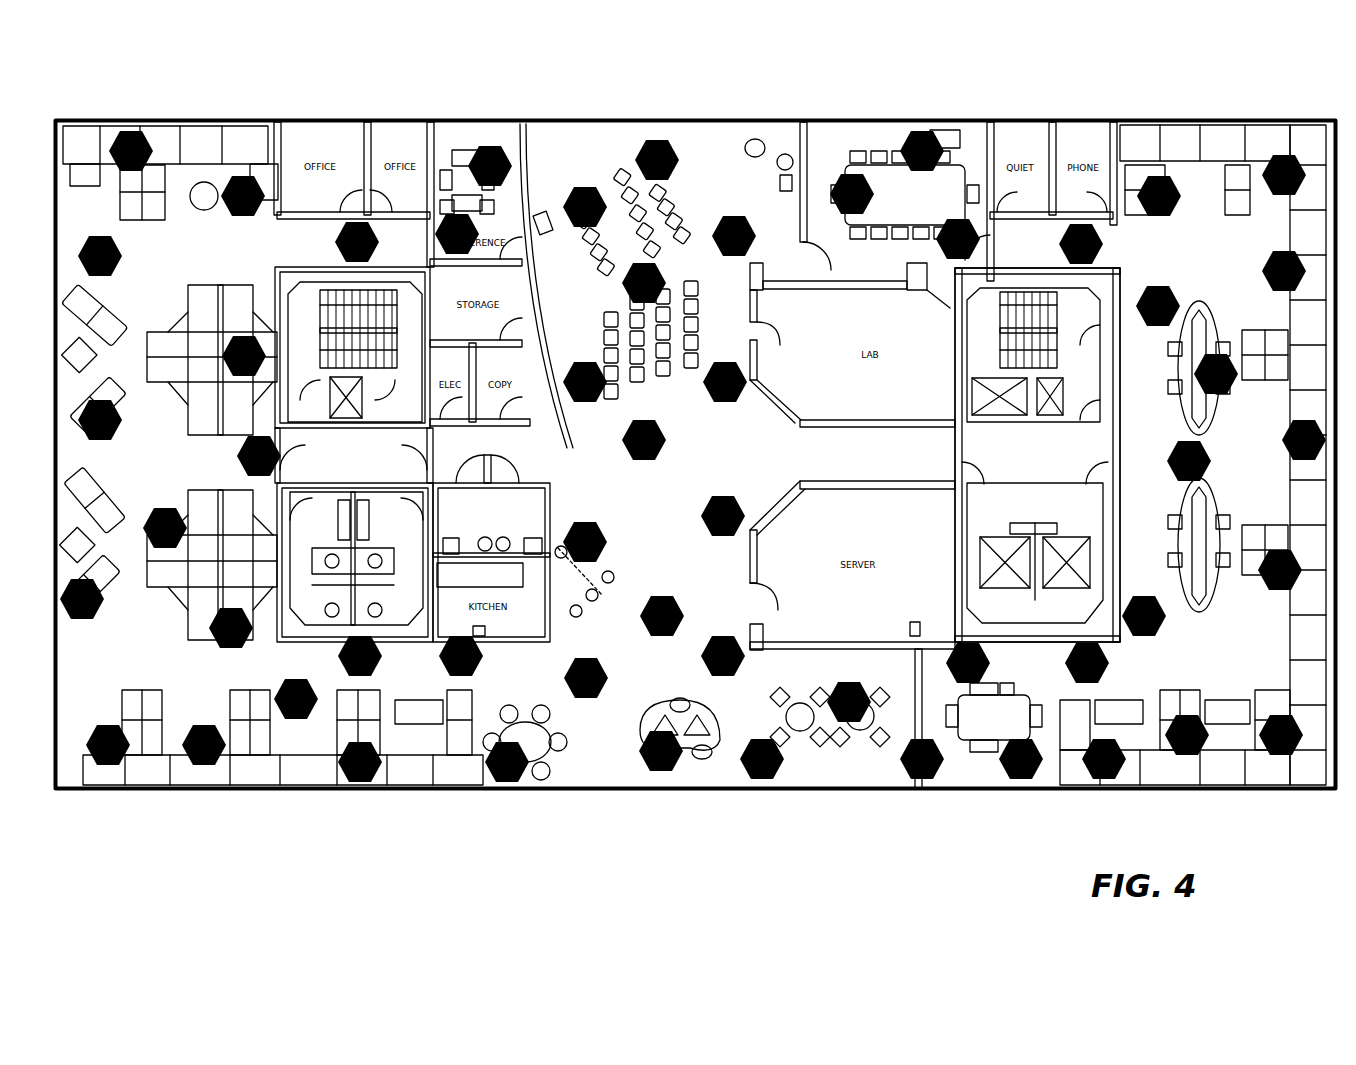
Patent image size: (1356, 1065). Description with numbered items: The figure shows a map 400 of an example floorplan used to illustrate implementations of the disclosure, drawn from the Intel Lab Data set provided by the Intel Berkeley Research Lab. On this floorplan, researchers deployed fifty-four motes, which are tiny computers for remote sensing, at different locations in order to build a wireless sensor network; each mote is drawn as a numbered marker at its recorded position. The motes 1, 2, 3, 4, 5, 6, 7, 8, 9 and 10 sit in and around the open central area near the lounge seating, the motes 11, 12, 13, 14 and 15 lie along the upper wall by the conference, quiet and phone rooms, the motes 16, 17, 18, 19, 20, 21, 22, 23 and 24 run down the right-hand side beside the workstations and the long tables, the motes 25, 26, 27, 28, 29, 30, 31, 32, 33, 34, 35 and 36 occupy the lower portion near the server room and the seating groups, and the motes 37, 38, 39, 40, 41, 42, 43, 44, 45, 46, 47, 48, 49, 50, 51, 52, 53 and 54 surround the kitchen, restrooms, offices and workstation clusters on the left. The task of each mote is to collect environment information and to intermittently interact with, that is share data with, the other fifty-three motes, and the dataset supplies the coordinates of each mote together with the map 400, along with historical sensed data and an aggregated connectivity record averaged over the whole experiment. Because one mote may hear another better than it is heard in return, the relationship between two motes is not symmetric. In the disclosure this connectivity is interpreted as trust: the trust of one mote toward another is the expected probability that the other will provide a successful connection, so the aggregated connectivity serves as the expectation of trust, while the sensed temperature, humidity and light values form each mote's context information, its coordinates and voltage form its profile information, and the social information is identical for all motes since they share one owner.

The map 400 is at (1282, 73).
The mote 1 is at (662, 616).
The mote 2 is at (585, 542).
The mote 3 is at (723, 516).
The mote 4 is at (644, 440).
The mote 5 is at (585, 382).
The mote 6 is at (725, 382).
The mote 7 is at (644, 283).
The mote 8 is at (585, 207).
The mote 9 is at (657, 160).
The mote 10 is at (734, 236).
The mote 11 is at (852, 194).
The mote 12 is at (922, 151).
The mote 13 is at (958, 239).
The mote 14 is at (1081, 244).
The mote 15 is at (1159, 196).
The mote 16 is at (1284, 175).
The mote 17 is at (1284, 271).
The mote 18 is at (1158, 306).
The mote 19 is at (1216, 374).
The mote 20 is at (1304, 440).
The mote 21 is at (1189, 461).
The mote 22 is at (1280, 570).
The mote 23 is at (1144, 616).
The mote 24 is at (1281, 735).
The mote 25 is at (1187, 735).
The mote 26 is at (1104, 759).
The mote 27 is at (1087, 663).
The mote 28 is at (1021, 759).
The mote 29 is at (968, 663).
The mote 30 is at (922, 759).
The mote 31 is at (849, 702).
The mote 32 is at (762, 759).
The mote 33 is at (723, 656).
The mote 34 is at (661, 751).
The mote 35 is at (586, 678).
The mote 36 is at (507, 762).
The mote 37 is at (461, 656).
The mote 38 is at (360, 762).
The mote 39 is at (360, 656).
The mote 40 is at (296, 699).
The mote 41 is at (204, 745).
The mote 42 is at (108, 745).
The mote 43 is at (231, 628).
The mote 44 is at (82, 599).
The mote 45 is at (165, 528).
The mote 46 is at (259, 456).
The mote 47 is at (100, 420).
The mote 48 is at (244, 356).
The mote 49 is at (100, 256).
The mote 50 is at (131, 151).
The mote 51 is at (243, 196).
The mote 52 is at (357, 242).
The mote 53 is at (457, 234).
The mote 54 is at (490, 166).